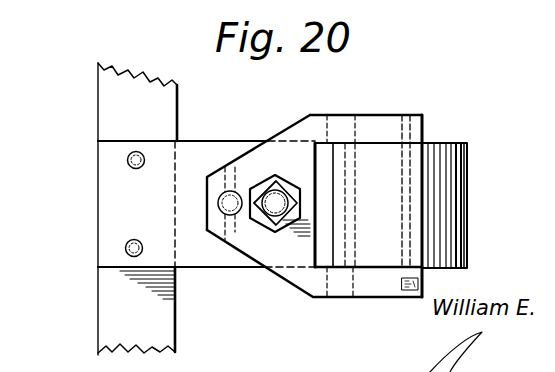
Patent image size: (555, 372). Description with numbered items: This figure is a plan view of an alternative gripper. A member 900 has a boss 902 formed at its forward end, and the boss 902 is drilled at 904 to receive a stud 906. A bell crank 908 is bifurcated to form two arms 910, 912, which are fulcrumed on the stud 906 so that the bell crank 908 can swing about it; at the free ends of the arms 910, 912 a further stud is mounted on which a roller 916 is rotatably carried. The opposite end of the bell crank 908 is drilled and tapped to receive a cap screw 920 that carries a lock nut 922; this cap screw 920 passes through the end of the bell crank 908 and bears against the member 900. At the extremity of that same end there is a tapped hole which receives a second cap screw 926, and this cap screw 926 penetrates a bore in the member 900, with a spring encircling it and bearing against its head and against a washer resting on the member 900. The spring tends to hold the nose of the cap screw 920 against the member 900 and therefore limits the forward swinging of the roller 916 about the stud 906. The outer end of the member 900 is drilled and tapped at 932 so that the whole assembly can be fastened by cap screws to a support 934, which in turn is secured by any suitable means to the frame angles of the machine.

The member 900 is at (193, 158).
The boss 902 is at (380, 257).
The drilled hole 904 is at (424, 171).
The stud 906 is at (387, 132).
The bell crank 908 is at (293, 148).
The arm 910 is at (410, 130).
The arm 912 is at (390, 291).
The roller 916 is at (458, 242).
The cap screw 920 is at (270, 180).
The lock nut 922 is at (280, 230).
The cap screw 926 is at (224, 211).
The drilled and tapped holes 932 is at (128, 166).
The support 934 is at (110, 118).